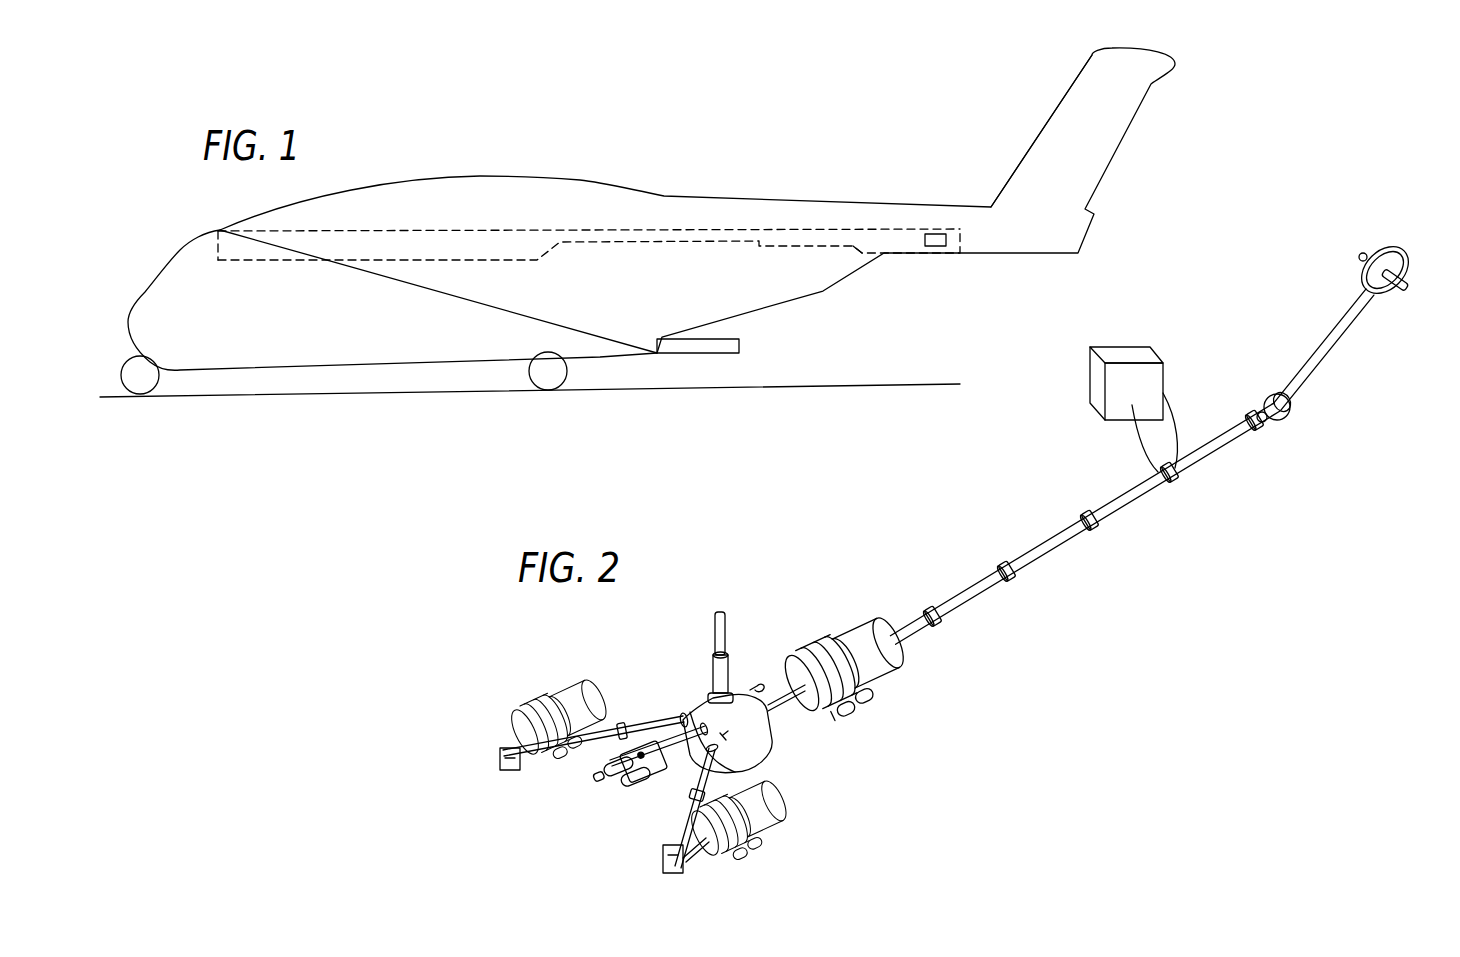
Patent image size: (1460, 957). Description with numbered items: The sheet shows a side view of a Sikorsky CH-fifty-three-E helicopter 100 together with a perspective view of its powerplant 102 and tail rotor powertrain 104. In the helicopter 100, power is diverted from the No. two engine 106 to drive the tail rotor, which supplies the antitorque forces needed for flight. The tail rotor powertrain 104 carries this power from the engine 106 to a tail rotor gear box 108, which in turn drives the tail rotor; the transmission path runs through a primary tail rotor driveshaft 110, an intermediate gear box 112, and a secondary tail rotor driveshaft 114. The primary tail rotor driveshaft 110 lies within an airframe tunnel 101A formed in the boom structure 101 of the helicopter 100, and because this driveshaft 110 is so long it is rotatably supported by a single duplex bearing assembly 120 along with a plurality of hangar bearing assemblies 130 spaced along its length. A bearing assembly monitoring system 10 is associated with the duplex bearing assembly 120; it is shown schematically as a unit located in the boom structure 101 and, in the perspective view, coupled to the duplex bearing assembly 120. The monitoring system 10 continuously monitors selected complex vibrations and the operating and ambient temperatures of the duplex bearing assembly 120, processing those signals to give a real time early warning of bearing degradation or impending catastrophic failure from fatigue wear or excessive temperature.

In FIG. 1, the bearing assembly monitoring system 10 is at (937, 246).
In FIG. 2, the bearing assembly monitoring system 10 is at (1125, 345).
In FIG. 1, the helicopter 100 is at (582, 153).
In FIG. 1, the boom structure 101 is at (871, 201).
In FIG. 1, the airframe tunnel 101A is at (788, 228).
In FIG. 2, the powerplant 102 is at (532, 690).
In FIG. 2, the tail rotor powertrain 104 is at (1093, 465).
In FIG. 2, the engine 106 is at (872, 630).
In FIG. 2, the tail rotor gear box 108 is at (1393, 255).
In FIG. 2, the primary tail rotor driveshaft 110 is at (1033, 557).
In FIG. 2, the intermediate gear box 112 is at (1273, 420).
In FIG. 2, the secondary tail rotor driveshaft 114 is at (1315, 358).
In FIG. 2, the duplex bearing assembly 120 is at (1175, 483).
In FIG. 2, the hangar bearing assemblies 130 is at (1088, 518).